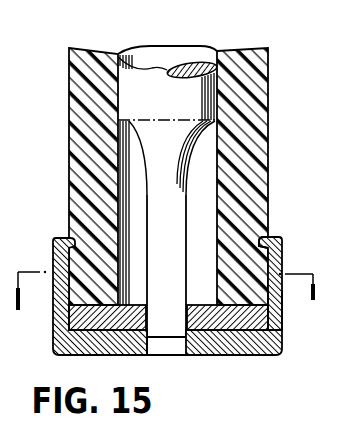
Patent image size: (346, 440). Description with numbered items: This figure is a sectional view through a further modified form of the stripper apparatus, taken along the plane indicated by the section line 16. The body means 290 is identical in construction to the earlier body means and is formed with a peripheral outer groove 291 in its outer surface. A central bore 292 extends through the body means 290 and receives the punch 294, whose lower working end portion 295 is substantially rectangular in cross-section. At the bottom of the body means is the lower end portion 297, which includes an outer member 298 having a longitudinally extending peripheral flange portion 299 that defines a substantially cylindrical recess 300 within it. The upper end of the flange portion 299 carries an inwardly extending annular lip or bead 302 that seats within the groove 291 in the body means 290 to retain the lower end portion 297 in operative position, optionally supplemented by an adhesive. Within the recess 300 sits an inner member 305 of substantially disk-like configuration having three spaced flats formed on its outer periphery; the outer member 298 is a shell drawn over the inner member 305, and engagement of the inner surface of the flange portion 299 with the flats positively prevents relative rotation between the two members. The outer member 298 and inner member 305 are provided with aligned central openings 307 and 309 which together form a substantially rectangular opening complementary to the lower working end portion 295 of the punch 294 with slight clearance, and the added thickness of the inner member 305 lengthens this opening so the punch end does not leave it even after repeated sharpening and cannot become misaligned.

The section line 16 is at (173, 284).
The body means 290 is at (268, 116).
The peripheral outer groove 291 is at (260, 240).
The central bore 292 is at (212, 174).
The punch 294 is at (161, 68).
The lower working end portion 295 is at (174, 329).
The lower end portion 297 is at (240, 357).
The outer member 298 is at (268, 346).
The peripheral flange portion 299 is at (283, 299).
The cylindrical recess 300 is at (272, 261).
The annular lip 302 is at (266, 246).
The inner member 305 is at (207, 305).
The central opening of the outer member 307 is at (148, 347).
The central opening of the inner member 309 is at (150, 314).